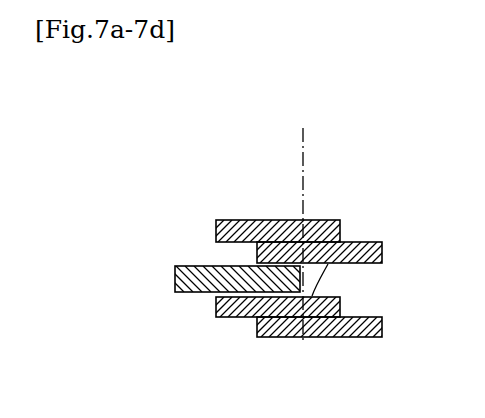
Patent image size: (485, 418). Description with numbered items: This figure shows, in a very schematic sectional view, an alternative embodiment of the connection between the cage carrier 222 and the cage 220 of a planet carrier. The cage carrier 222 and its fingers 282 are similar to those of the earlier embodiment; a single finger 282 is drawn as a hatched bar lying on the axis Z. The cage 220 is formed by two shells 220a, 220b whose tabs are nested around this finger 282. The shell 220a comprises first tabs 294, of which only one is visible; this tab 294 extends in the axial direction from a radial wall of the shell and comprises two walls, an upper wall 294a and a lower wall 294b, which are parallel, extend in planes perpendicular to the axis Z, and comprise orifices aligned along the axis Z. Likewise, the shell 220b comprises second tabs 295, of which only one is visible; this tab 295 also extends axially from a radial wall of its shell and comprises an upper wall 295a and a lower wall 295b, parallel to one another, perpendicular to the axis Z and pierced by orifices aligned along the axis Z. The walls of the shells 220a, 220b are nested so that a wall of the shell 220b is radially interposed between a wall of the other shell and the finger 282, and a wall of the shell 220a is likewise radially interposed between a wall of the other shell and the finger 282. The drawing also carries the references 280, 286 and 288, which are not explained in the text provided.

The axis Z is at (306, 145).
The cage 220 is at (279, 214).
The shell 220a is at (238, 238).
The shell 220b is at (333, 263).
The cage carrier 222 is at (197, 268).
The gap 280 is at (348, 275).
The finger 282 is at (173, 261).
The contact surface 286 is at (352, 242).
The edge 288 is at (322, 220).
The first tab 294 is at (234, 268).
The upper wall 294a is at (208, 234).
The lower wall 294b is at (216, 317).
The second tab 295 is at (333, 263).
The upper wall 295a is at (329, 200).
The lower wall 295b is at (307, 338).